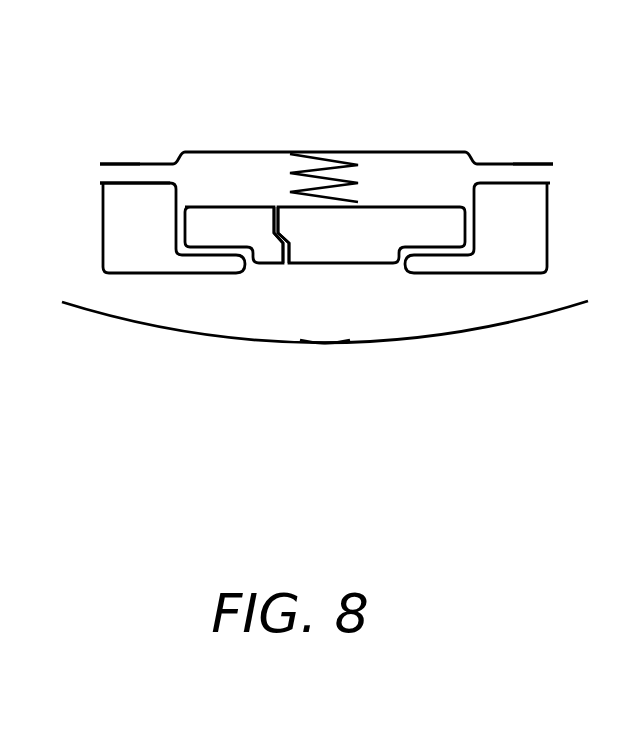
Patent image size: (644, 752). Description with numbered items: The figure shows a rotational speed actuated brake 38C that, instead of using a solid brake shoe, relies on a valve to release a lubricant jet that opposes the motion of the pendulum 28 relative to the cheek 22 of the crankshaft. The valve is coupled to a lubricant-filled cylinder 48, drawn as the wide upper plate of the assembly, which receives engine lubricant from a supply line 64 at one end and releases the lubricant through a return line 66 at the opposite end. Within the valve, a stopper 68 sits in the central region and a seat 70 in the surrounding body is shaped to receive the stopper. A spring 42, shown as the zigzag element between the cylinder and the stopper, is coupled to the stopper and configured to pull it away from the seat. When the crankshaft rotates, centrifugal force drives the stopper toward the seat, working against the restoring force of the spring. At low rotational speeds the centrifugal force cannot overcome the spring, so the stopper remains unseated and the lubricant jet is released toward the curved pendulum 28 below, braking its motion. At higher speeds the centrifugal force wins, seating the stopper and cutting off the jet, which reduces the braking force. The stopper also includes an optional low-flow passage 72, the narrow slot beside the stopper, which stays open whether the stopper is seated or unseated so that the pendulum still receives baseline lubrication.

The cheek 22 is at (122, 143).
The pendulum 28 is at (66, 338).
The rotational speed actuated brake 38C is at (462, 301).
The spring 42 is at (357, 183).
The lubricant-filled cylinder 48 is at (219, 152).
The supply line 64 is at (98, 183).
The return line 66 is at (582, 185).
The stopper 68 is at (320, 277).
The seat 70 is at (154, 238).
The low-flow passage 72 is at (286, 269).